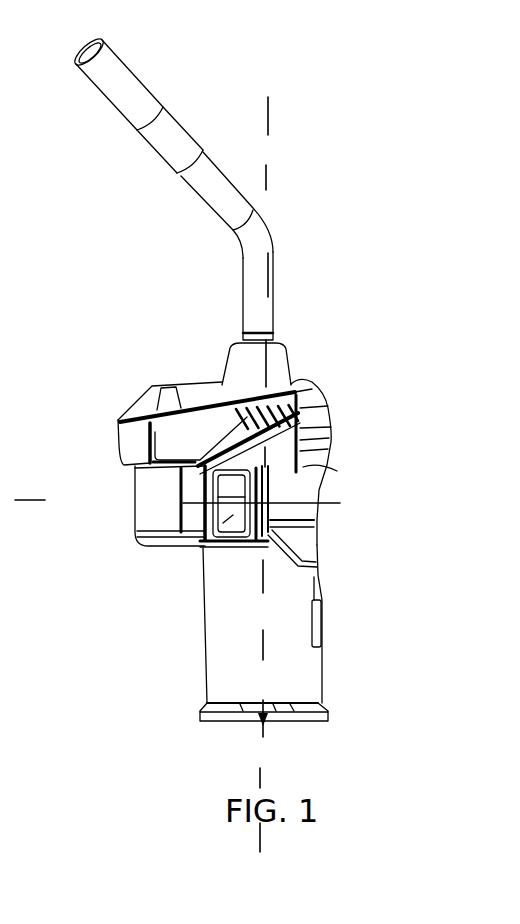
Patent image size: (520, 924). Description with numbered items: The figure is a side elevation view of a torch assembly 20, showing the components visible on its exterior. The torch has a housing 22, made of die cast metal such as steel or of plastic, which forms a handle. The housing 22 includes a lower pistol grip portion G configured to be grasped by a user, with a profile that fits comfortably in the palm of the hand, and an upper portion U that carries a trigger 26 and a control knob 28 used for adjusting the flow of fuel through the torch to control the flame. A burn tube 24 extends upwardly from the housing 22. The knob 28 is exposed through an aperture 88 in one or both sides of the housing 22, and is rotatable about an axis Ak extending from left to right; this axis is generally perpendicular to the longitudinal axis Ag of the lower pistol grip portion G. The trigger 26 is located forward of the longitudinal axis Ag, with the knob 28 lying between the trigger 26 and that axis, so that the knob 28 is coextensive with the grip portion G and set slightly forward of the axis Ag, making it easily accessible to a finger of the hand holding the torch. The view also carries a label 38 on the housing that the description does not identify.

The torch assembly 20 is at (258, 191).
The housing 22 is at (268, 648).
The burn tube 24 is at (253, 297).
The trigger 26 is at (147, 512).
The control knob 28 is at (202, 548).
The housing section 38 is at (346, 461).
The aperture 88 is at (410, 503).
The lower pistol grip portion G is at (237, 620).
The upper portion U is at (320, 403).
The longitudinal axis of the lower pistol grip portion Ag is at (258, 77).
The axis of rotation of the knob Ak is at (425, 527).